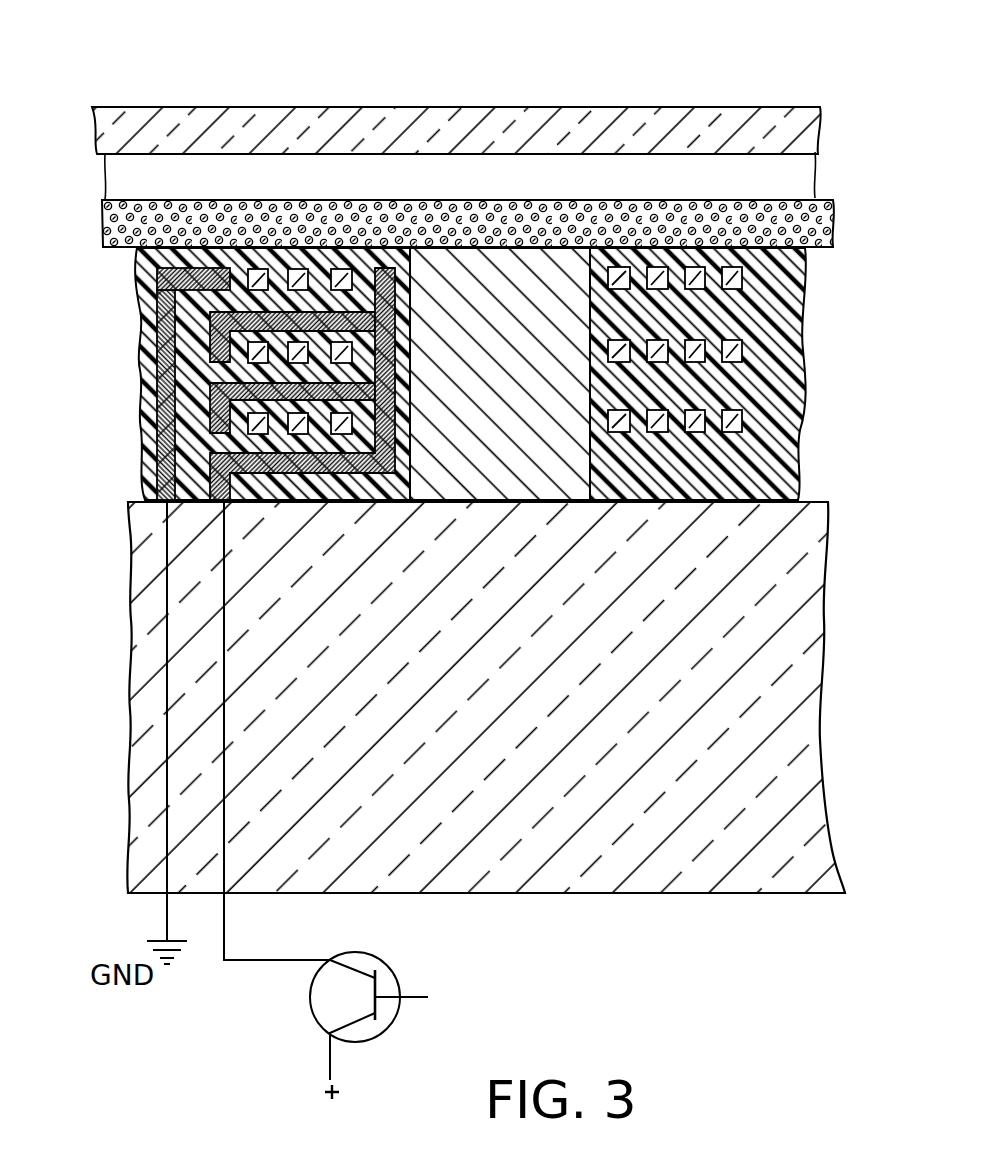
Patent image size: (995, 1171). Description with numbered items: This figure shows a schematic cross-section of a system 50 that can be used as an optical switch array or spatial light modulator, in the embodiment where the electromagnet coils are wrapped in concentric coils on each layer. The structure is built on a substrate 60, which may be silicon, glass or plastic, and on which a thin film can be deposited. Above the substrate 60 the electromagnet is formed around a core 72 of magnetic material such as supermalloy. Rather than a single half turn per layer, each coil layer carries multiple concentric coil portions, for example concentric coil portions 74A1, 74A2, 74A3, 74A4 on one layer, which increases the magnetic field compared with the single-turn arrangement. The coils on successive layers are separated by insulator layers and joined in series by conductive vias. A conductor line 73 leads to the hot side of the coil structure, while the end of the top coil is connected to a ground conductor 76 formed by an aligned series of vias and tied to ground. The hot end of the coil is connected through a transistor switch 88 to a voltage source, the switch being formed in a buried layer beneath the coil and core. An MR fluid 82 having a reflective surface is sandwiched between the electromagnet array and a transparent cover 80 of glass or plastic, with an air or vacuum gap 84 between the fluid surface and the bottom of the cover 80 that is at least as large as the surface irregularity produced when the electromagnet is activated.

The system 50 is at (378, 63).
The transparent cover 80 is at (138, 105).
The air or vacuum gap 84 is at (142, 180).
The MR fluid 82 is at (103, 217).
The core 72 is at (521, 375).
The ground conductor 76 is at (156, 419).
The conductor line 73 is at (210, 473).
The concentric coil portion 74A1 is at (628, 406).
The concentric coil portion 74A2 is at (666, 408).
The concentric coil portion 74A3 is at (697, 433).
The concentric coil portion 74A4 is at (737, 431).
The substrate 60 is at (147, 676).
The transistor switch 88 is at (312, 1007).